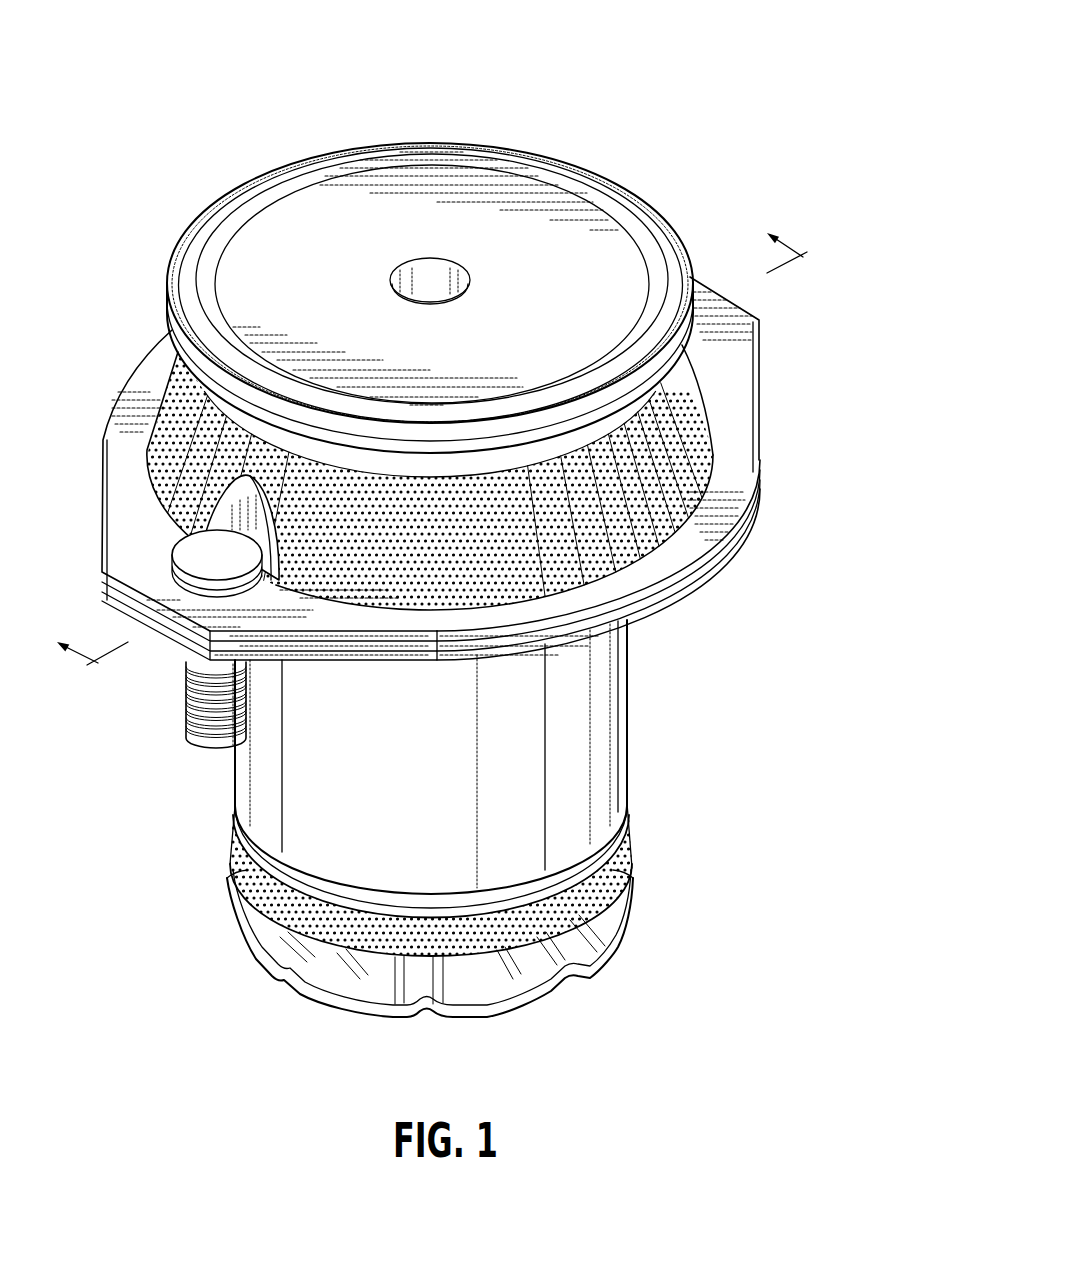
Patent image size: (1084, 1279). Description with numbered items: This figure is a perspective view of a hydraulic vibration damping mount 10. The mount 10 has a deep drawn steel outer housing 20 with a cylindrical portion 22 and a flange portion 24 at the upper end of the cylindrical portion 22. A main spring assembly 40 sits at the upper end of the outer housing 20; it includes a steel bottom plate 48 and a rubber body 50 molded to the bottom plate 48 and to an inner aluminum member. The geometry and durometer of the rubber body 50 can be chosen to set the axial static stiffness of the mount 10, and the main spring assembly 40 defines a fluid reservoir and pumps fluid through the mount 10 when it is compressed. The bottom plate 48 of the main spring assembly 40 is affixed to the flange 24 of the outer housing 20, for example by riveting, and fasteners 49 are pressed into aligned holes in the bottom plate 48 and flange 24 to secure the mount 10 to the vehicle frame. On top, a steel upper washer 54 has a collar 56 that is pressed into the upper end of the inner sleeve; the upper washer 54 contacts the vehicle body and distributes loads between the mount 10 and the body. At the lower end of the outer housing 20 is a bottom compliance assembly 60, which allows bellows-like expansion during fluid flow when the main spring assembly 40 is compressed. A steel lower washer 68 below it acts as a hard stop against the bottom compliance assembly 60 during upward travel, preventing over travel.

The hydraulic vibration damping mount 10 is at (664, 61).
The outer housing 20 is at (632, 772).
The cylindrical portion 22 is at (628, 688).
The flange portion 24 is at (685, 592).
The main spring assembly 40 is at (700, 378).
The bottom plate 48 is at (125, 497).
The fasteners 49 is at (185, 705).
The rubber body 50 is at (703, 450).
The upper washer 54 is at (243, 228).
The collar 56 is at (415, 283).
The bottom compliance assembly 60 is at (240, 862).
The lower washer 68 is at (345, 1014).